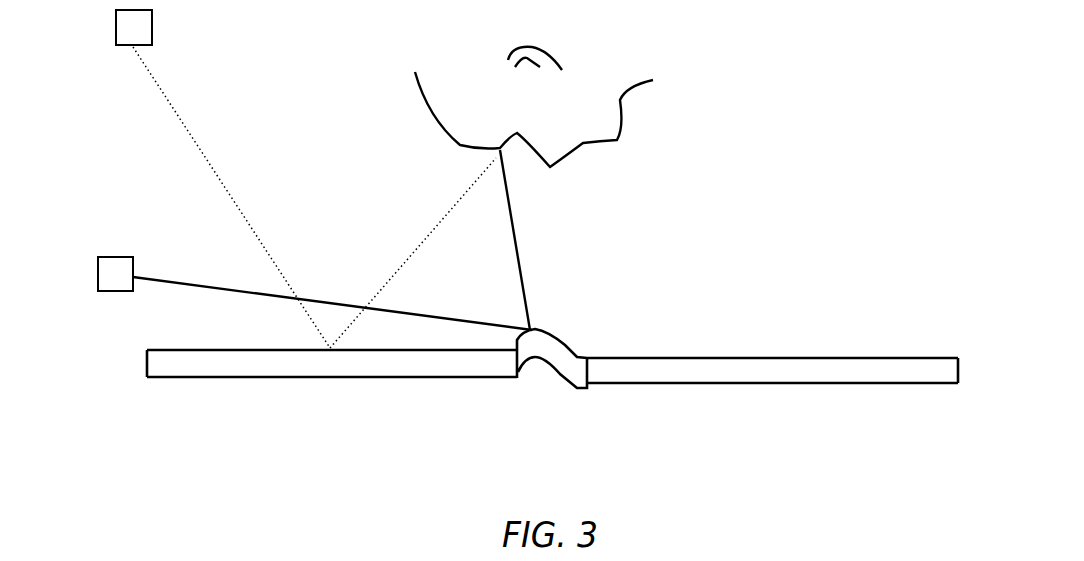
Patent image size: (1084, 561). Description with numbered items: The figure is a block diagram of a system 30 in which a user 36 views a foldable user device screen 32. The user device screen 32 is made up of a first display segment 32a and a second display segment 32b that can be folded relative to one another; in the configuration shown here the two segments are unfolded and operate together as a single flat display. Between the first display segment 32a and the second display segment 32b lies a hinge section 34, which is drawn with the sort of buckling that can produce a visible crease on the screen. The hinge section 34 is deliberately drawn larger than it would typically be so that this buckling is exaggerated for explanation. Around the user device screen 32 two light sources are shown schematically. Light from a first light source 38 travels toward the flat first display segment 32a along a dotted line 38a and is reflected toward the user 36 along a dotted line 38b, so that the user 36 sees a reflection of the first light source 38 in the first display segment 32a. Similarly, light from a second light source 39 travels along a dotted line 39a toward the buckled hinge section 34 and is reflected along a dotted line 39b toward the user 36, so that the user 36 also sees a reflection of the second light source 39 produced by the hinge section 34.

The system 30 is at (539, 378).
The user device screen 32 is at (539, 351).
The first display segment 32a is at (335, 375).
The second display segment 32b is at (683, 385).
The hinge section 34 is at (572, 325).
The user 36 is at (627, 128).
The first light source 38 is at (115, 28).
The dotted line 38a is at (157, 93).
The dotted line 38b is at (428, 238).
The second light source 39 is at (113, 291).
The dotted line 39a is at (212, 285).
The dotted line 39b is at (519, 267).